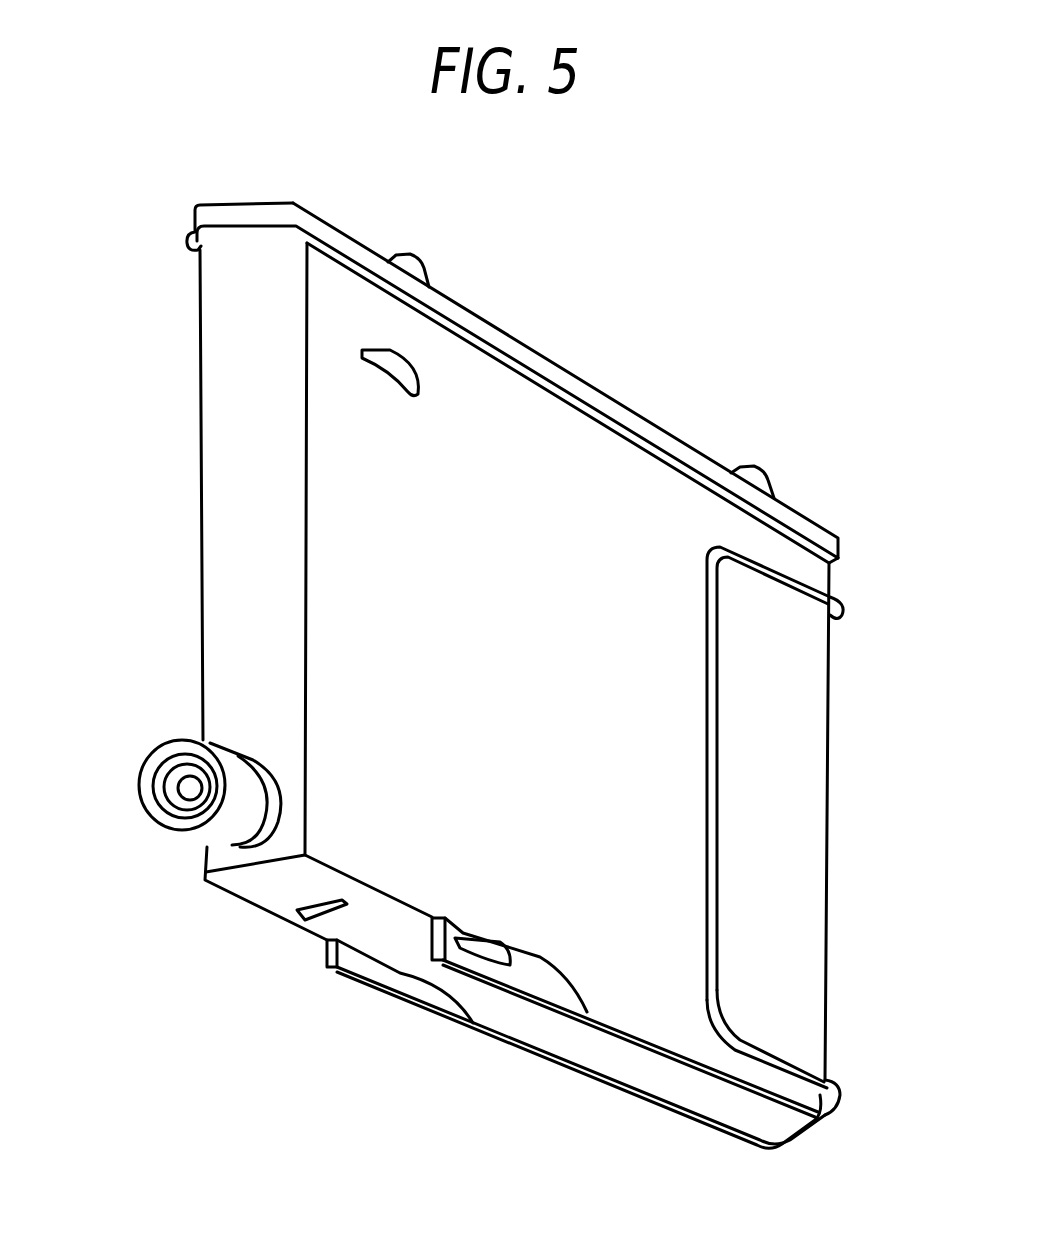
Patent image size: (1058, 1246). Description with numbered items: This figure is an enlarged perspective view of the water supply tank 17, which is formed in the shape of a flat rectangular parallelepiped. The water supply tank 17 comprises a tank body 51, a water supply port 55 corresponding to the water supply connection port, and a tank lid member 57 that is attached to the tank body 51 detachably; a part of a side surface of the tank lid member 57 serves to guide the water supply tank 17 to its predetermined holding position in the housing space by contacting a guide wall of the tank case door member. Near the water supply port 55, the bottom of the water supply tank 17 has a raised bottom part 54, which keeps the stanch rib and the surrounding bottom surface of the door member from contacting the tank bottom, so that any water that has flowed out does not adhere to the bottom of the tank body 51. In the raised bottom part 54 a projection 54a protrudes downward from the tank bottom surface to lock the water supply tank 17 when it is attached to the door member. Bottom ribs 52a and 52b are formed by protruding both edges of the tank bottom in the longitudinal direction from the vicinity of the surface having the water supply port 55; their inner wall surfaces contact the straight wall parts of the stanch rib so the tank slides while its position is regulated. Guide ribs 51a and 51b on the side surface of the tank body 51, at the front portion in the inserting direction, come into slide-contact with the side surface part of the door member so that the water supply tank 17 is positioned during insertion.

The water supply tank 17 is at (858, 480).
The tank body 51 is at (218, 349).
The guide rib 51a is at (417, 357).
The guide rib 51b is at (491, 934).
The bottom rib 52a is at (337, 972).
The bottom rib 52b is at (527, 980).
The raised bottom part 54 is at (397, 960).
The projection 54a is at (298, 918).
The water supply port 55 is at (170, 748).
The tank lid member 57 is at (640, 427).